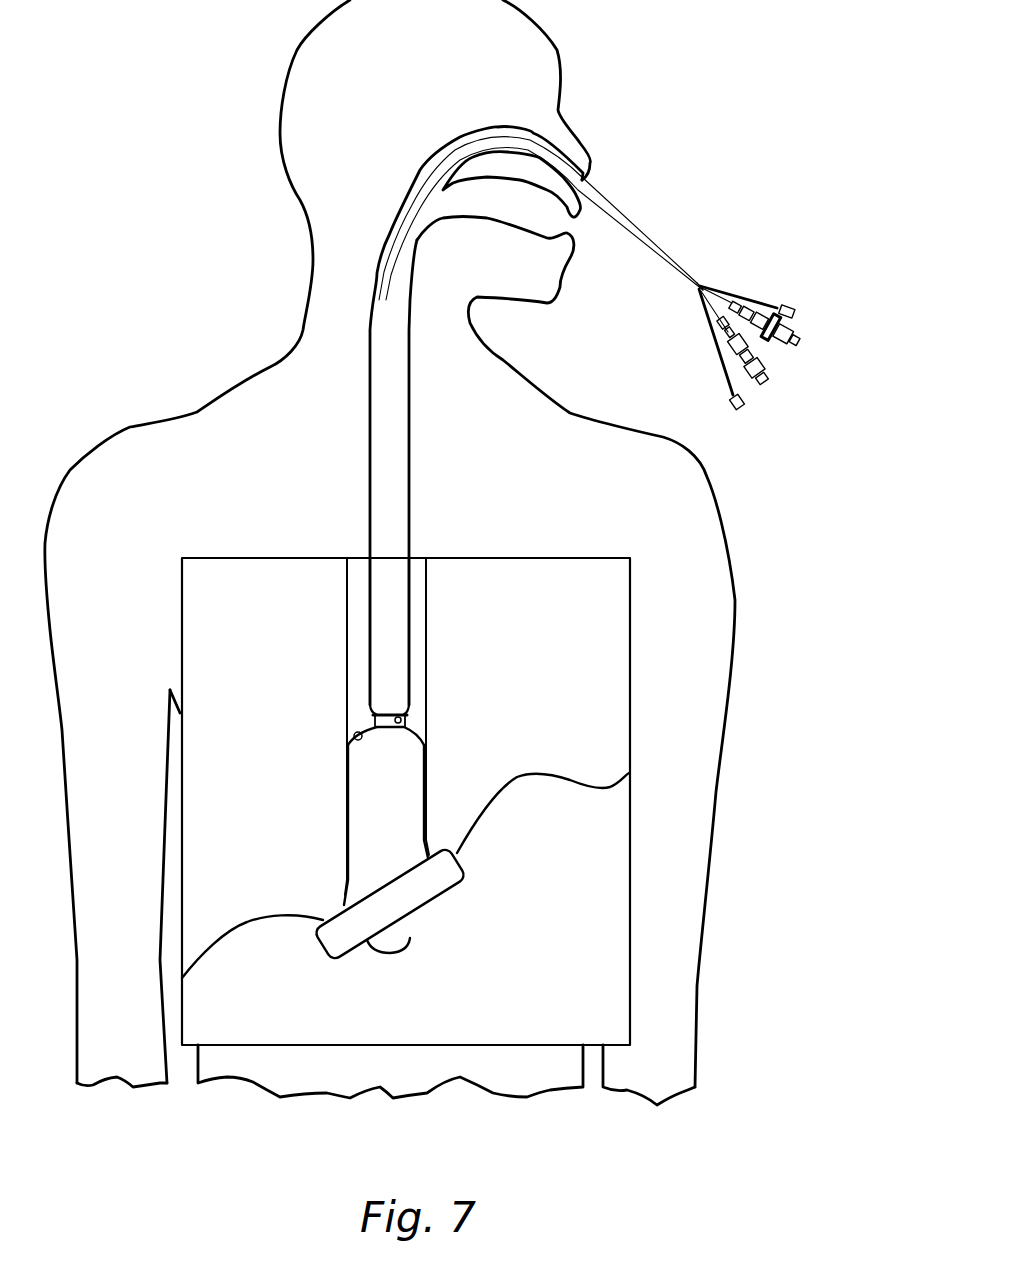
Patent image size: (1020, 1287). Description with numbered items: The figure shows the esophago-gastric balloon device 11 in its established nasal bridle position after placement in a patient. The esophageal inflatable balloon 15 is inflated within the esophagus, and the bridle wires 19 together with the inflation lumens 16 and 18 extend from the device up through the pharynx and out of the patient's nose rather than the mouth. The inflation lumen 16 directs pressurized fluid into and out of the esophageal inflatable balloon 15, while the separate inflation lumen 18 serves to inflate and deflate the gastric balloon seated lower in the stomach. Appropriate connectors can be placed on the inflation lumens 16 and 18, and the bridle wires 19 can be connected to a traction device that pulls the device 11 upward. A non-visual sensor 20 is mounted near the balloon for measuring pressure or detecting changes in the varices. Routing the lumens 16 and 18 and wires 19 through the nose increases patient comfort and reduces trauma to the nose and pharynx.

The esophago-gastric balloon device 11 is at (467, 544).
The esophageal inflatable balloon 15 is at (405, 795).
The inflation lumen 16 is at (780, 403).
The inflation lumen 18 is at (820, 353).
The bridle wires 19 is at (791, 310).
The non-visual sensor 20 is at (368, 742).